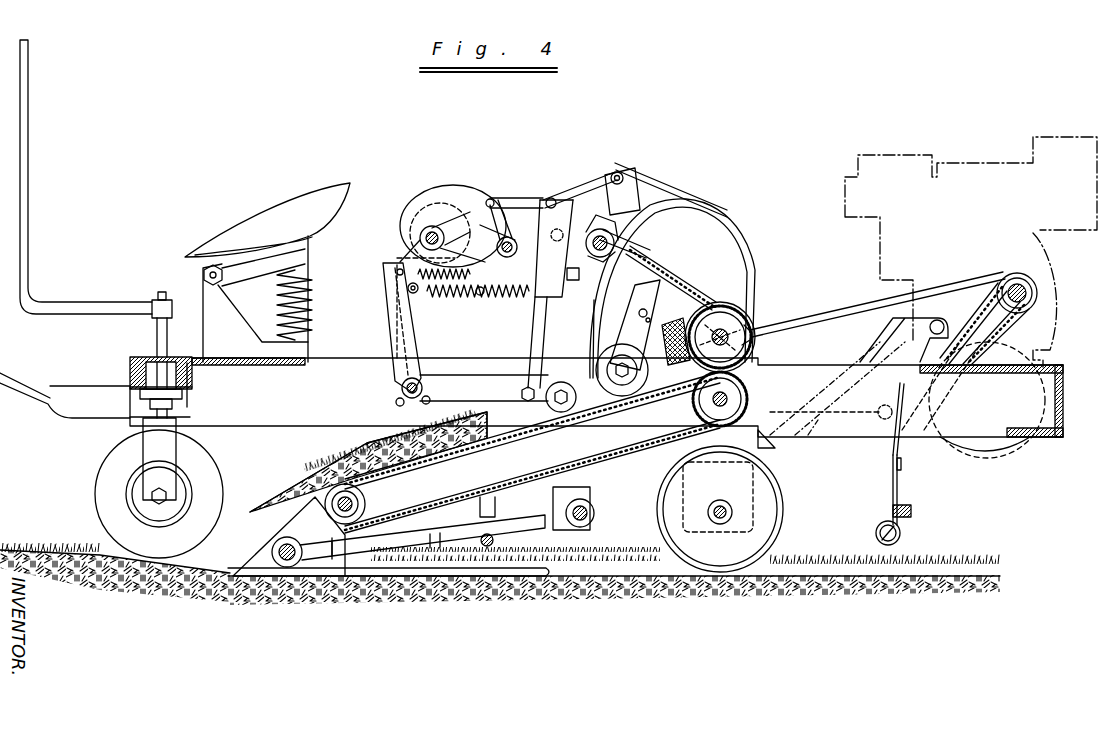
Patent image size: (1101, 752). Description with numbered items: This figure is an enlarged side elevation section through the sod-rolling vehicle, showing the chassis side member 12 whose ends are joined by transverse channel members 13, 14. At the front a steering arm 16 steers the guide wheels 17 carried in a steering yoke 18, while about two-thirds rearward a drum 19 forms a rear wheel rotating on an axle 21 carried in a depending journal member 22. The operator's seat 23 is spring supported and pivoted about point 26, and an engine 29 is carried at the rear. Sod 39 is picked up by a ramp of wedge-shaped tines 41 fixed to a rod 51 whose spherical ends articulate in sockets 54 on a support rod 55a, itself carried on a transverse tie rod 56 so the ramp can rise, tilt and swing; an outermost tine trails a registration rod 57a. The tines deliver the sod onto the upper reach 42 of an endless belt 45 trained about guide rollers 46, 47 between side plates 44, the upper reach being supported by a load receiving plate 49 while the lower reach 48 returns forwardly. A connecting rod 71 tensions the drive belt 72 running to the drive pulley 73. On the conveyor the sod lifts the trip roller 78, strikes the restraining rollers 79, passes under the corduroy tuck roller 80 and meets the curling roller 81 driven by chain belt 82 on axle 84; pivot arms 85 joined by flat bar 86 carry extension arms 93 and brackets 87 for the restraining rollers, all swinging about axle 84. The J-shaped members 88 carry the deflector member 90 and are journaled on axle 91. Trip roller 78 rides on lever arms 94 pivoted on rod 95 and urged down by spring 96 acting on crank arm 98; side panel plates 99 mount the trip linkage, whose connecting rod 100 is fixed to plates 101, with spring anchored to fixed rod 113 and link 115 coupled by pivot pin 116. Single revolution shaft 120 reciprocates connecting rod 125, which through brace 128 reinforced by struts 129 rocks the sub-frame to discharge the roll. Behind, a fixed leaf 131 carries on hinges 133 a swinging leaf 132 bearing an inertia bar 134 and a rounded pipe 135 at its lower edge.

The side member 12 is at (596, 397).
The transverse channel member 13 is at (130, 372).
The transverse channel member 14 is at (1063, 437).
The steering arm 16 is at (28, 119).
The guide wheels 17 is at (108, 462).
The steering yoke 18 is at (151, 460).
The drums 19 is at (782, 521).
The axle 21 is at (732, 508).
The journal members 22 is at (757, 506).
The seat 23 is at (277, 210).
The pivot point 26 is at (205, 272).
The engine 29 is at (985, 163).
The sod 39 is at (300, 481).
The tines 41 is at (250, 578).
The upper reach 42 is at (558, 440).
The side plates 44 is at (634, 440).
The endless belt 45 is at (532, 436).
The guide roller 46 is at (366, 503).
The guide roller 47 is at (700, 412).
The lower reach 48 is at (590, 458).
The load receiving plate 49 is at (450, 460).
The rod 51 is at (290, 568).
The annular socket 54 is at (310, 562).
The support rod 55a is at (500, 515).
The tie rod 56 is at (595, 513).
The registration rod 57a is at (452, 578).
The connecting rod 71 is at (813, 450).
The drive belt 72 is at (862, 303).
The drive pulley 73 is at (766, 442).
The trip roller 78 is at (587, 373).
The restraining rollers 79 is at (603, 384).
The tuck roller 80 is at (708, 399).
The curling roller 81 is at (754, 300).
The chain belt 82 is at (663, 258).
The axle 84 is at (750, 322).
The pivot arm 85 is at (724, 308).
The flat bar 86 is at (708, 300).
The bracket 87 is at (645, 342).
The J-shaped member 88 is at (735, 228).
The deflector member 90 is at (546, 349).
The axle 91 is at (613, 232).
The extension arm 93 is at (632, 297).
The lever arm 94 is at (480, 375).
The pivot rod 95 is at (402, 390).
The biasing spring 96 is at (458, 294).
The crank arm 98 is at (395, 323).
The side panel plates 99 is at (433, 342).
The connecting rod 100 is at (553, 323).
The plates 101 is at (586, 198).
The fixed rod 113 is at (408, 290).
The link 115 is at (513, 196).
The pivot pin 116 is at (550, 197).
The single revolution shaft 120 is at (428, 233).
The connecting rod 125 is at (570, 198).
The brace 128 is at (630, 178).
The struts 129 is at (682, 193).
The leaf 131 is at (893, 446).
The leaf 132 is at (893, 495).
The hinges 133 is at (901, 463).
The inertia bar 134 is at (911, 511).
The pipe 135 is at (900, 534).